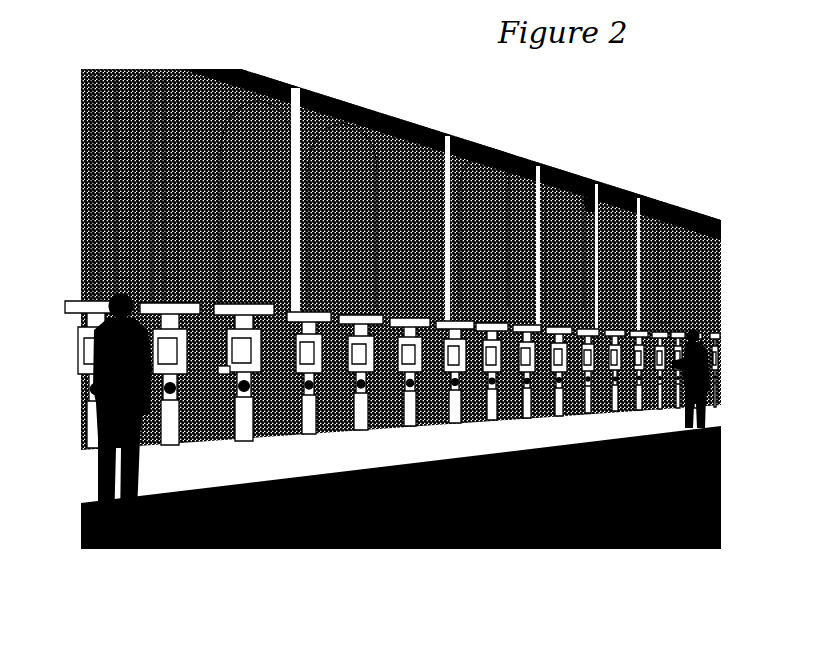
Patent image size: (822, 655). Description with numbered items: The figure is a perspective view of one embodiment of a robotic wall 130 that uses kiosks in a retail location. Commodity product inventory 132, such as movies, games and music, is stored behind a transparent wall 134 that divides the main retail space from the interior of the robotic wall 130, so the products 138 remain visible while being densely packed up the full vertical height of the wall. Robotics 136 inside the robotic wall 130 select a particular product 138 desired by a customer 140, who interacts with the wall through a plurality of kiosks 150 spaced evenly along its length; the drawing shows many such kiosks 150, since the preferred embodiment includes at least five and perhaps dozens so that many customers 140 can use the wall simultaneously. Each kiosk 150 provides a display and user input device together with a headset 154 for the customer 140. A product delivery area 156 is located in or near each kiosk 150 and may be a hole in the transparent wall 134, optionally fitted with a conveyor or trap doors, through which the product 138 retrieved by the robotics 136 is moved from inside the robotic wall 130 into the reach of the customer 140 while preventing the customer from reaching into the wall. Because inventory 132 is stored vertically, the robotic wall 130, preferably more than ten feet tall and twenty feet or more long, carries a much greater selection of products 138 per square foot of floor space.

The robotic wall 130 is at (238, 62).
The commodity product inventory 132 is at (583, 197).
The transparent wall 134 is at (320, 135).
The robotics 136 is at (97, 64).
The products 138 is at (163, 88).
The customer 140 is at (83, 352).
The kiosk 150 is at (228, 302).
The headset 154 is at (238, 382).
The product delivery area 156 is at (215, 365).